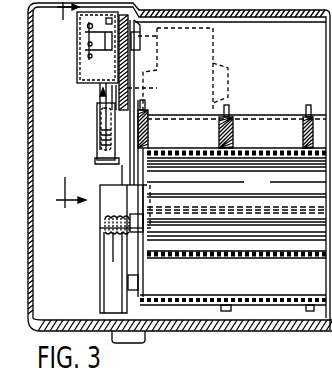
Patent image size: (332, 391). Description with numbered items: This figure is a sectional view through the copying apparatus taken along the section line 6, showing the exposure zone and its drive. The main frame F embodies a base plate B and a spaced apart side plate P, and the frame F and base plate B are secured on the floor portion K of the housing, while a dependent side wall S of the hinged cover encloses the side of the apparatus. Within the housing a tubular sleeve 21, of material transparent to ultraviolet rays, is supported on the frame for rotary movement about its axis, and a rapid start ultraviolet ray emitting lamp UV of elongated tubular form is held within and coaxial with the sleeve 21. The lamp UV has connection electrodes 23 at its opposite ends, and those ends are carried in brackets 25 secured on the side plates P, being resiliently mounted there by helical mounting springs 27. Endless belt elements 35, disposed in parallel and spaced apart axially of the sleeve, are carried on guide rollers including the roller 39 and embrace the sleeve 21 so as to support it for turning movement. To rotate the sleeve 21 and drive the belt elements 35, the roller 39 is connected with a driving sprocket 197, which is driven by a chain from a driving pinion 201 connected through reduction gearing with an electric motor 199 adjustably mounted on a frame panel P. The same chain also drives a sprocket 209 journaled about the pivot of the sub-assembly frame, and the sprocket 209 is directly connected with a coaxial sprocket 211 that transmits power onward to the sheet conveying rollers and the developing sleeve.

The section line 6- 6 is at (64, 105).
The coaxial sprocket 211 is at (83, 30).
The sprocket 209 is at (110, 61).
The driving pinion 201 is at (100, 93).
The driving sprocket 197 is at (98, 133).
The side walls S is at (34, 158).
The side plates P is at (122, 172).
The electric motor 199 is at (213, 56).
The guide roller 39 is at (266, 124).
The endless belt elements 35 is at (186, 115).
The tubular sleeve 21 is at (246, 151).
The ultraviolet ray emitting lamp UV is at (209, 232).
The connection electrodes 23 is at (143, 212).
The helical mounting springs 27 is at (105, 225).
The brackets 25 is at (113, 249).
The main frame F is at (86, 271).
The base plate B is at (75, 320).
The floor portion K is at (331, 348).